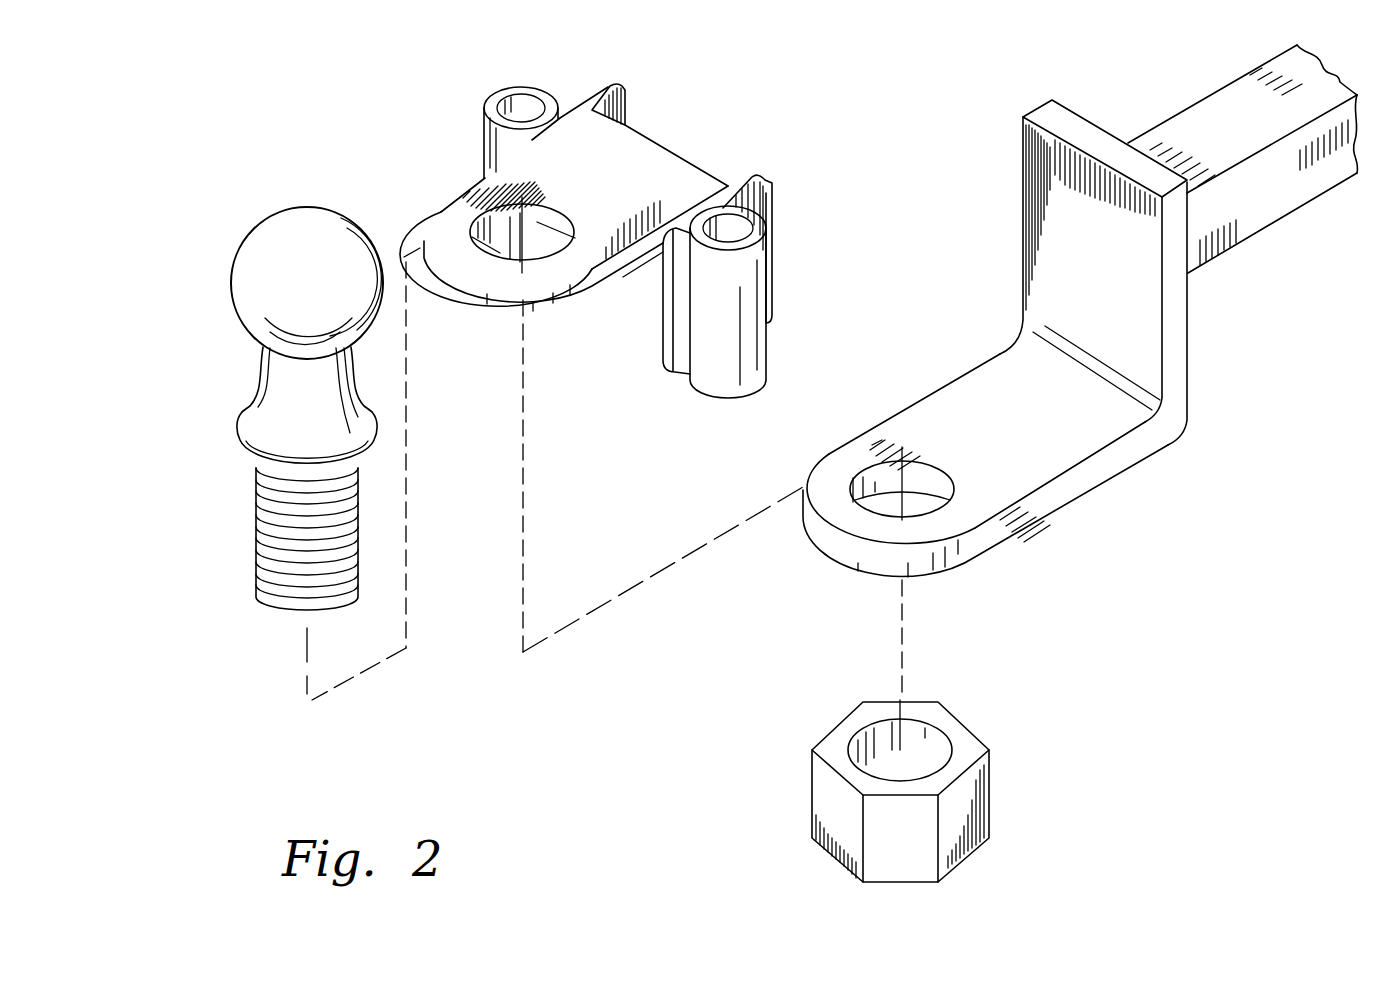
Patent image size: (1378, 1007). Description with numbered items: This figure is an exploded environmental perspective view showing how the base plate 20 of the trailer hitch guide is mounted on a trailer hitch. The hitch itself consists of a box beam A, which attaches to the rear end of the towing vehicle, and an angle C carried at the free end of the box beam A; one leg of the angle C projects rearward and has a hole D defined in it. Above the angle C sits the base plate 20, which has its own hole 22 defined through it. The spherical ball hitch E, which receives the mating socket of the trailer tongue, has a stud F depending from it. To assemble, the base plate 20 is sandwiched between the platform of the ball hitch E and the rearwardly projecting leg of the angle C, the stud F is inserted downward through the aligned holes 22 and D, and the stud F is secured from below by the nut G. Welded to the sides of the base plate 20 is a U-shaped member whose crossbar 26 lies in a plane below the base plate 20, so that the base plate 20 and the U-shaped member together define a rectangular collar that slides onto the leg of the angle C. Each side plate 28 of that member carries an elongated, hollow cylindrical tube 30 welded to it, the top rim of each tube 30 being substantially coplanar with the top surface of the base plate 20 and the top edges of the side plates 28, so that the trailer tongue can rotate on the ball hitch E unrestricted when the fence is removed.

The spherical ball hitch E is at (300, 245).
The stud F is at (260, 546).
The base plate 20 is at (564, 227).
The hole 22 is at (490, 207).
The crossbar 26 is at (643, 275).
The side plates 28 is at (613, 88).
The cylindrical tube 30 is at (493, 106).
The box beam A is at (1202, 137).
The angle C is at (1087, 473).
The hole D is at (880, 473).
The nut G is at (965, 795).